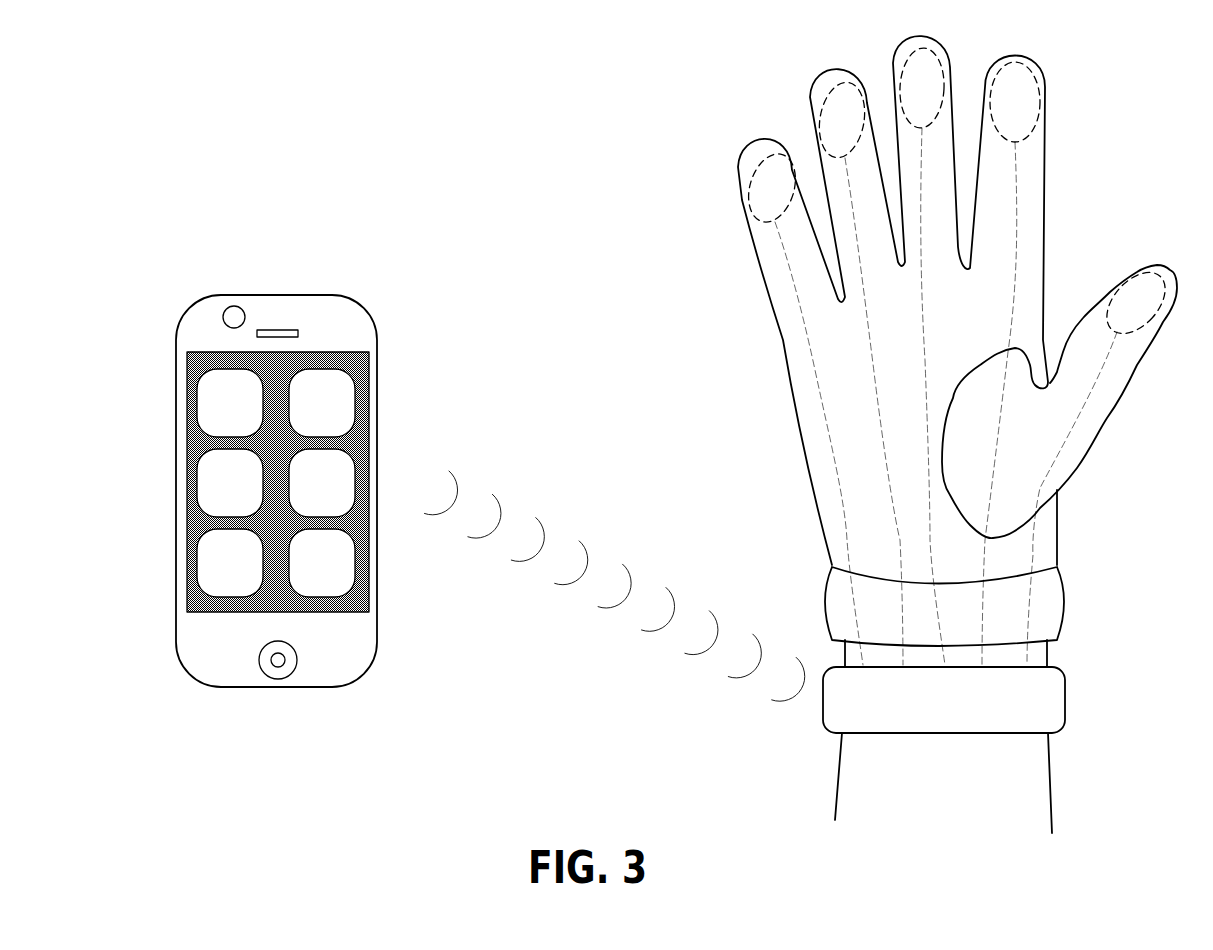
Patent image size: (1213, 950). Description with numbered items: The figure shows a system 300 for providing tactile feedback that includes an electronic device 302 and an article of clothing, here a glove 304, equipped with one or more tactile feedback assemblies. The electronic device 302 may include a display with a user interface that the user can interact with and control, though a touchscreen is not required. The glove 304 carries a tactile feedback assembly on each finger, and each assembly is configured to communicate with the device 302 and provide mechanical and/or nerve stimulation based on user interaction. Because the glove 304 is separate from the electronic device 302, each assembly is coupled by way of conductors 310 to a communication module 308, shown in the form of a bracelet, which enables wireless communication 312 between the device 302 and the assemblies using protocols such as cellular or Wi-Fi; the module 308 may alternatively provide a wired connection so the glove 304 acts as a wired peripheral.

The system 300 is at (122, 100).
The electronic device 302 is at (168, 281).
The glove 304 is at (660, 258).
The communication module 308 is at (1065, 700).
The conductors 310 is at (823, 443).
The wireless communication 312 is at (598, 607).